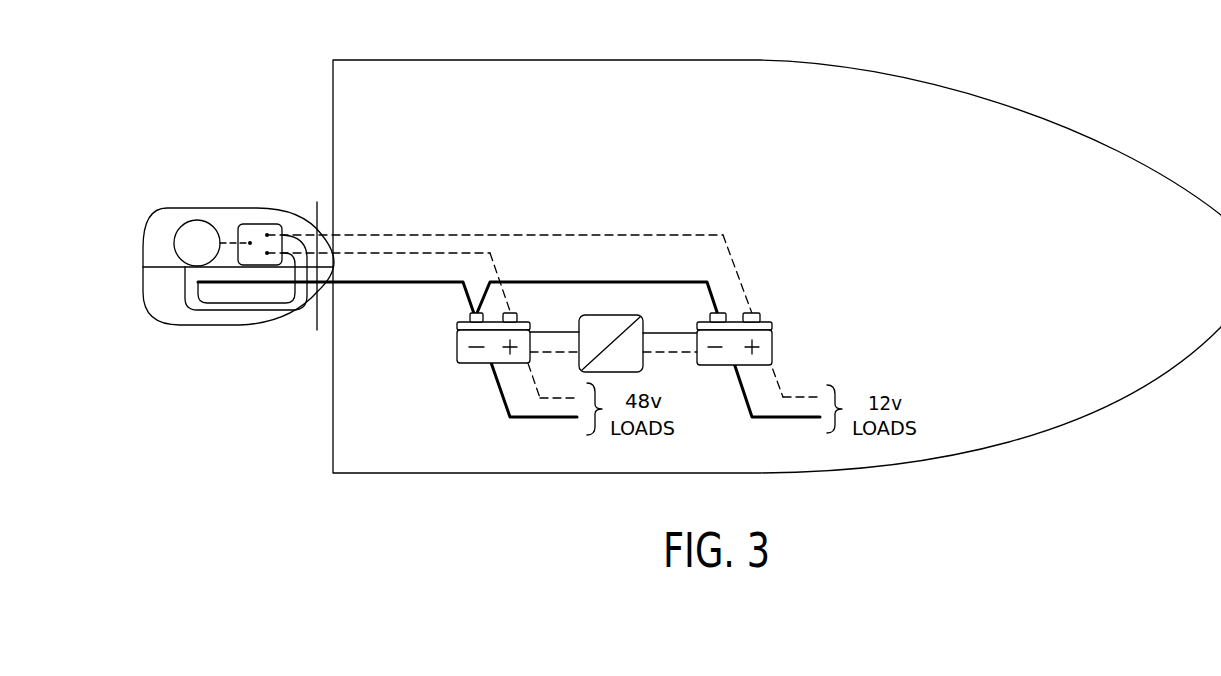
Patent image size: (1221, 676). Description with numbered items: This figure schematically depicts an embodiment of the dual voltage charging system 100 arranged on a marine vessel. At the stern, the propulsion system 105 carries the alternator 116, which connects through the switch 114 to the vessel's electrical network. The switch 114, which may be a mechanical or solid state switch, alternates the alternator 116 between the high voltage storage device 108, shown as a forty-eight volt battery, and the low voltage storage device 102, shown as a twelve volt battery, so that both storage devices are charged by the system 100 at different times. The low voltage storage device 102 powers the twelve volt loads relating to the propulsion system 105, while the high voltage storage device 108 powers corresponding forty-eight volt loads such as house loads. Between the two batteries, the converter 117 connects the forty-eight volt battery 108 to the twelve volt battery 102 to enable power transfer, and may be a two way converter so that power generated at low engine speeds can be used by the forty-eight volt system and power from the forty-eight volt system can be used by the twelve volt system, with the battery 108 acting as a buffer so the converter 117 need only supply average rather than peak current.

The dual voltage charging system 100 is at (284, 79).
The low voltage storage device 102 is at (778, 314).
The propulsion system 105 is at (145, 285).
The high voltage storage device 108 is at (452, 347).
The switch 114 is at (258, 224).
The alternator 116 is at (181, 227).
The converter 117 is at (621, 308).